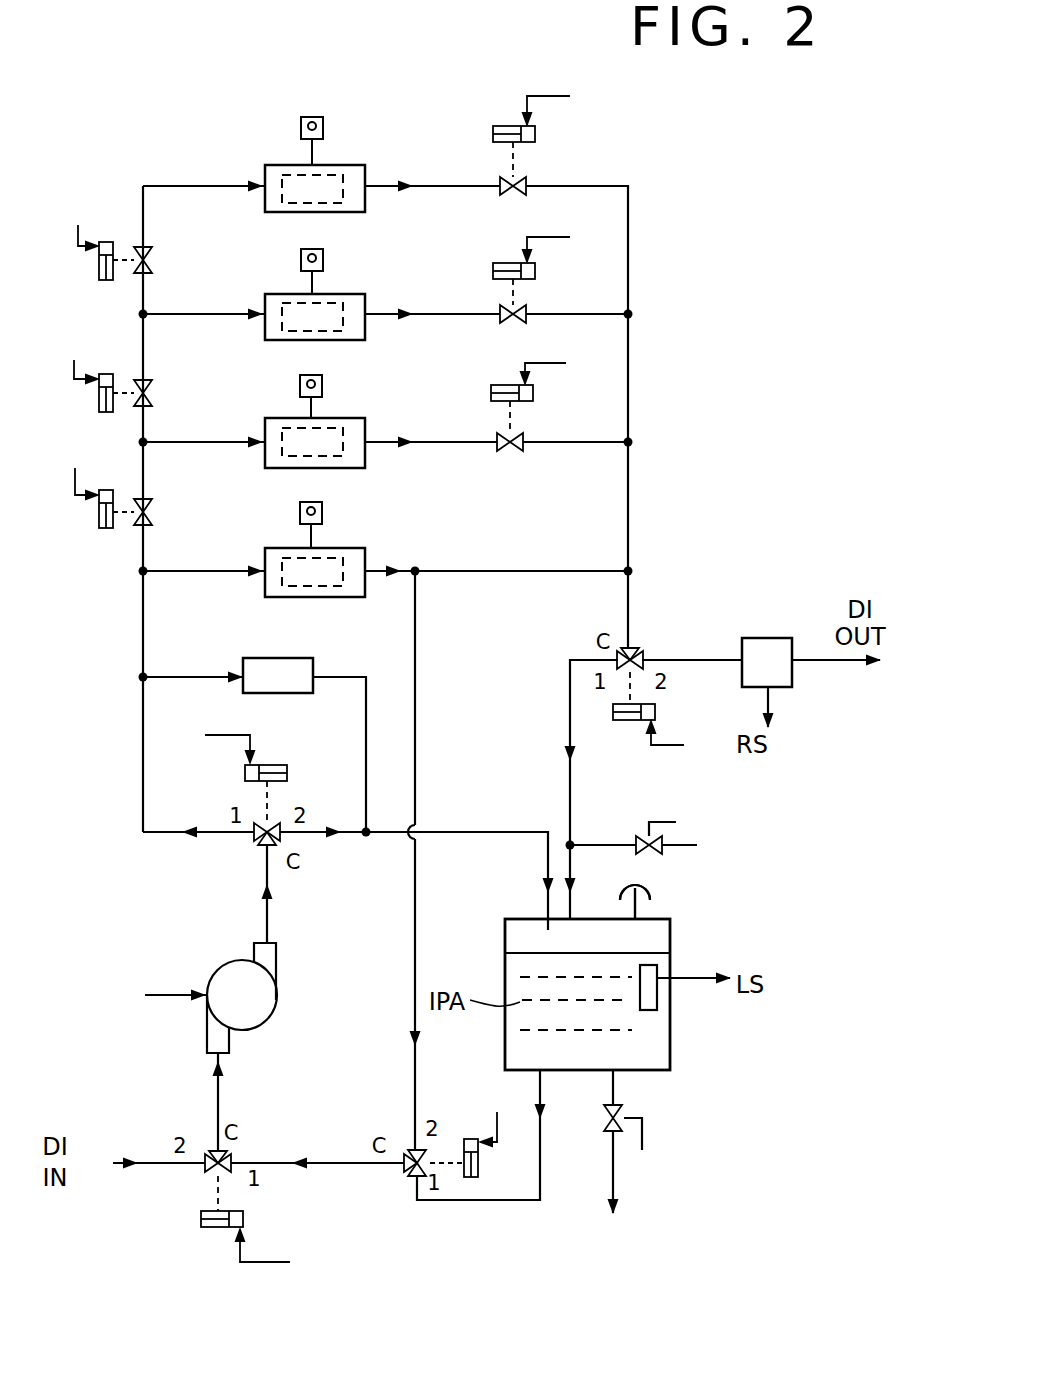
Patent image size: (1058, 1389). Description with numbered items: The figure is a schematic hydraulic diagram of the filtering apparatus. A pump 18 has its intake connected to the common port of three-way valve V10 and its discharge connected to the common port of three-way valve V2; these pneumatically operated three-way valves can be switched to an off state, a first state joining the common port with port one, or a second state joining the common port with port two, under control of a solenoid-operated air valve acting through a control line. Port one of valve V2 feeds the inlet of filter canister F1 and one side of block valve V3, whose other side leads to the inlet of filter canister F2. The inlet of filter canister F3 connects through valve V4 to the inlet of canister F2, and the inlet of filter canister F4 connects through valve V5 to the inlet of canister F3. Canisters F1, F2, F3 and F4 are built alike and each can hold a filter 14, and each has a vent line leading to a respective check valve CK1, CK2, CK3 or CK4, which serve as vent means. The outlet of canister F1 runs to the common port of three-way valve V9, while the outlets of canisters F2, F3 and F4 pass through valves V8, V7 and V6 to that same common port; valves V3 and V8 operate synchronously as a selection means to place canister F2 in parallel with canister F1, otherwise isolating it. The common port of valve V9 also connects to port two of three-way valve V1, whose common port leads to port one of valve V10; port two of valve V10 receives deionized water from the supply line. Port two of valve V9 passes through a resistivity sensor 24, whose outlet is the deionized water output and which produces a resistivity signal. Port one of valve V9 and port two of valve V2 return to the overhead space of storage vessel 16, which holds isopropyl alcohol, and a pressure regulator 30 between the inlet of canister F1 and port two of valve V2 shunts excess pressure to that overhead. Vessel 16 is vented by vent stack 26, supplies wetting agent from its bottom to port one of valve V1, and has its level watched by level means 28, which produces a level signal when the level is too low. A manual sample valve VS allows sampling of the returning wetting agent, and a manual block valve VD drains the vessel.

The filter 14 is at (343, 183).
The storage vessel 16 is at (672, 1062).
The pump 18 is at (272, 1020).
The resistivity sensor 24 is at (770, 638).
The vent stack 26 is at (655, 905).
The level means 28 is at (660, 966).
The pressure regulator 30 is at (277, 658).
The filter canister F1 is at (365, 548).
The filter canister F2 is at (368, 468).
The filter canister F3 is at (276, 294).
The filter canister F4 is at (268, 165).
The check valve CK1 is at (290, 512).
The check valve CK2 is at (330, 373).
The check valve CK3 is at (330, 262).
The check valve CK4 is at (328, 112).
The three-way valve V1 is at (398, 1185).
The three-way valve V2 is at (240, 855).
The block valve V3 is at (170, 512).
The valve V4 is at (170, 393).
The valve V5 is at (170, 262).
The valve V6 is at (532, 172).
The valve V7 is at (492, 303).
The valve V8 is at (488, 430).
The three-way valve V9 is at (648, 632).
The three-way valve V10 is at (240, 1142).
The manual sample valve VS is at (692, 825).
The manual block valve VD is at (632, 1110).